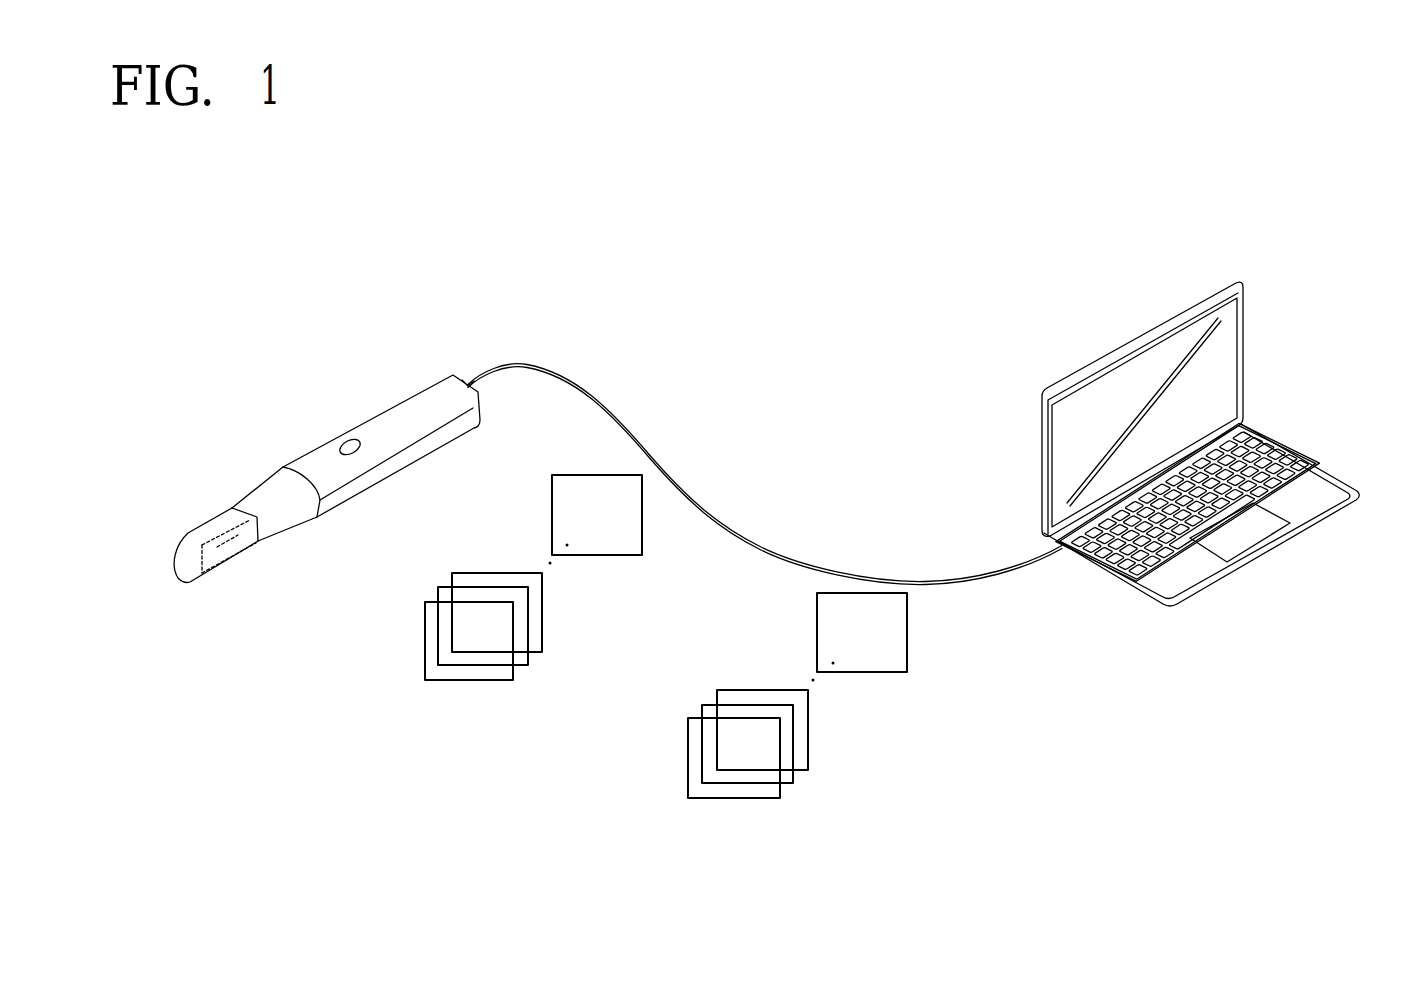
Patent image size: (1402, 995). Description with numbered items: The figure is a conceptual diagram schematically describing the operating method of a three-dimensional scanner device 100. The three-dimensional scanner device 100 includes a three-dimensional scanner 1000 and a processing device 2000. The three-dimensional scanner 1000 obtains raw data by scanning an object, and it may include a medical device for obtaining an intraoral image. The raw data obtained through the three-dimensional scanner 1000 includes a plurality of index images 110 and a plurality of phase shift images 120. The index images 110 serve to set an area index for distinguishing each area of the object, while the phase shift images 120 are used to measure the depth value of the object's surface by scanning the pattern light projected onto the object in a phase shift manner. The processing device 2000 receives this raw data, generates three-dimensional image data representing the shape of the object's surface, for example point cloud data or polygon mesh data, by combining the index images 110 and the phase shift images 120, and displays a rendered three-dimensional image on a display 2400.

The 3D scanner device 100 is at (1097, 190).
The 3D scanner 1000 is at (382, 413).
The processing device 2000 is at (1197, 443).
The display 2400 is at (1216, 371).
The index images 110 is at (533, 473).
The phase shift images 120 is at (800, 592).